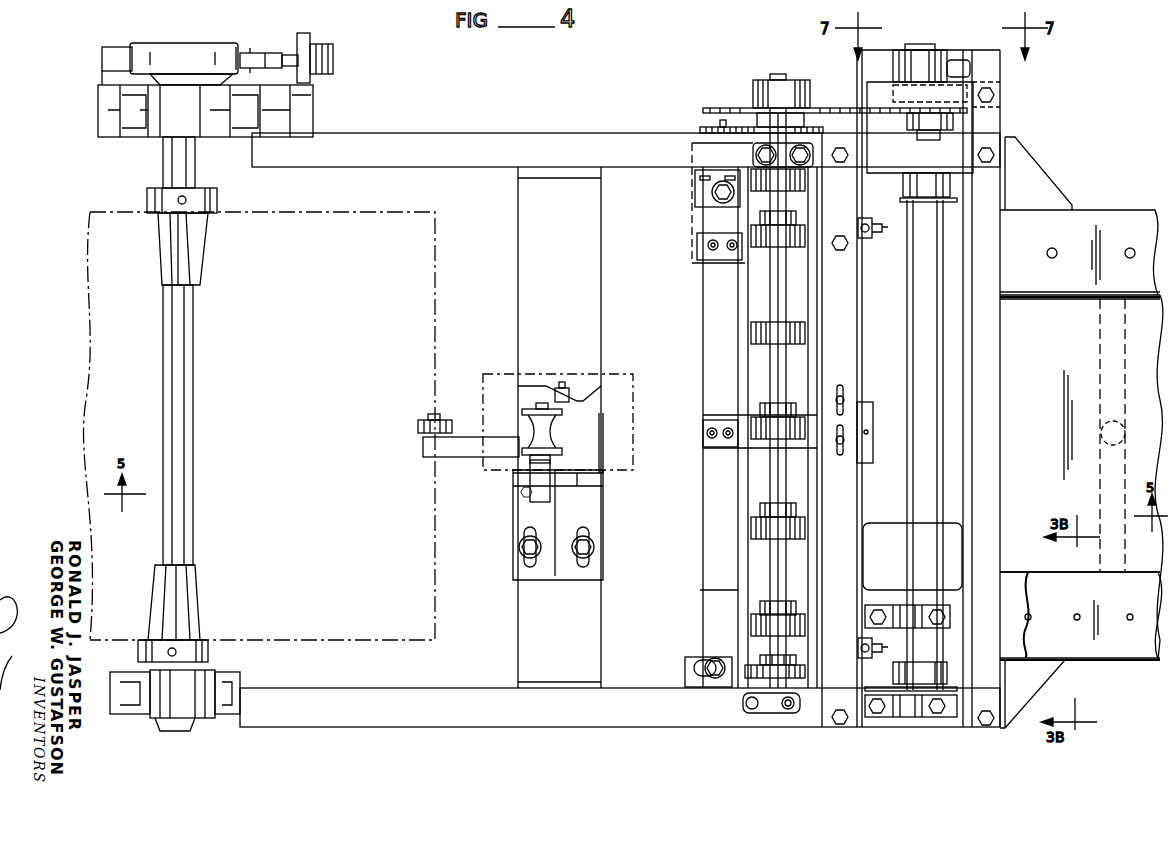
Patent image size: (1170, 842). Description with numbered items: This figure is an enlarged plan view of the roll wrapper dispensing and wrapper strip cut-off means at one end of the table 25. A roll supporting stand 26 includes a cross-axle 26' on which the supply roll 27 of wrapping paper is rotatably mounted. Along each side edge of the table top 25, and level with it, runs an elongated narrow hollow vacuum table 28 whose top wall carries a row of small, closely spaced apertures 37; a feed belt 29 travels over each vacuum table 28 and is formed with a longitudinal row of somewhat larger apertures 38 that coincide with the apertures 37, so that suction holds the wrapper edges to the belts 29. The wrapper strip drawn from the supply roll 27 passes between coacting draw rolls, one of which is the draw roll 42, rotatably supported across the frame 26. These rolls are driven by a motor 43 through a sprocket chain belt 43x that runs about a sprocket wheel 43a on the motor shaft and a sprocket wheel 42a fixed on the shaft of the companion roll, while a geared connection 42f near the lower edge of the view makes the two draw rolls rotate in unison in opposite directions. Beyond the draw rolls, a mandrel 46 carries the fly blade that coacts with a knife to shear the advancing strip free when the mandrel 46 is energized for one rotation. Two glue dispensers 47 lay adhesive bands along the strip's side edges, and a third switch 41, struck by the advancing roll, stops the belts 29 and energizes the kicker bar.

The roll supporting stand 26 is at (620, 440).
The cross-axle 26' is at (215, 382).
The supply roll 27 is at (436, 286).
The vacuum table 28 is at (1142, 299).
The belt 29 is at (1092, 225).
The table 25 is at (1081, 432).
The apertures 37 is at (1031, 615).
The apertures 38 is at (1057, 256).
The third switch 41 is at (1100, 365).
The draw roll 42 is at (752, 334).
The sprocket wheel 42a is at (806, 128).
The geared connection 42f is at (753, 673).
The motor 43 is at (691, 224).
The sprocket wheel 43a is at (700, 128).
The sprocket chain belt 43x is at (755, 128).
The mandrel 46 is at (930, 138).
The glue dispenser 47 is at (868, 238).